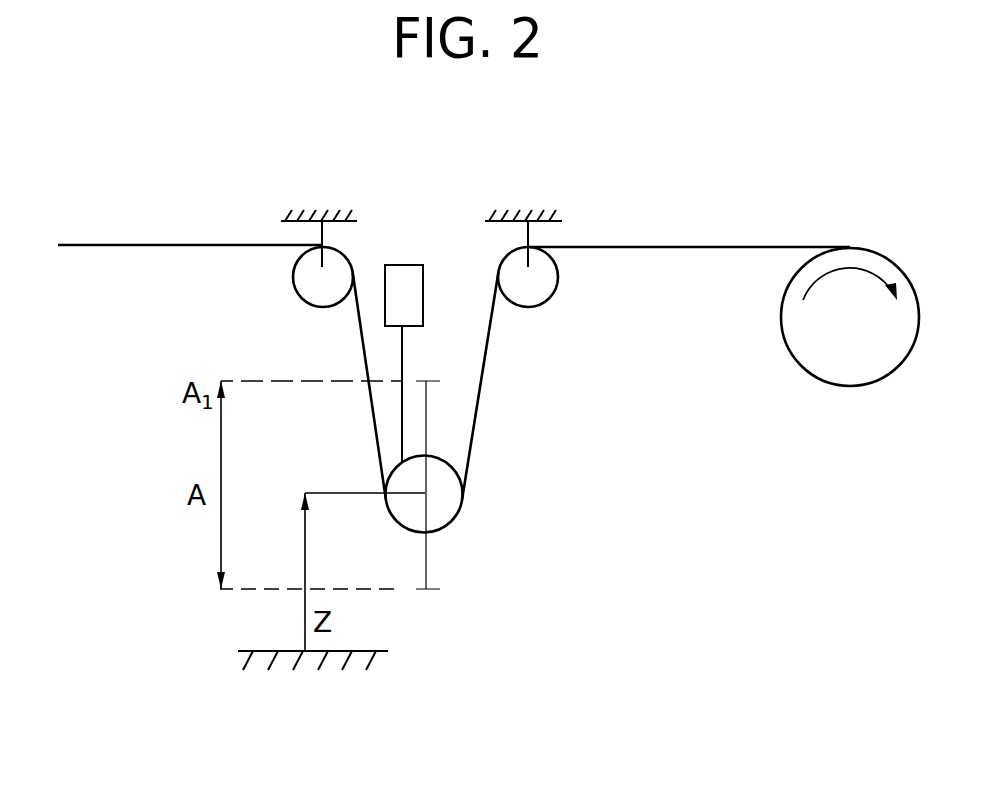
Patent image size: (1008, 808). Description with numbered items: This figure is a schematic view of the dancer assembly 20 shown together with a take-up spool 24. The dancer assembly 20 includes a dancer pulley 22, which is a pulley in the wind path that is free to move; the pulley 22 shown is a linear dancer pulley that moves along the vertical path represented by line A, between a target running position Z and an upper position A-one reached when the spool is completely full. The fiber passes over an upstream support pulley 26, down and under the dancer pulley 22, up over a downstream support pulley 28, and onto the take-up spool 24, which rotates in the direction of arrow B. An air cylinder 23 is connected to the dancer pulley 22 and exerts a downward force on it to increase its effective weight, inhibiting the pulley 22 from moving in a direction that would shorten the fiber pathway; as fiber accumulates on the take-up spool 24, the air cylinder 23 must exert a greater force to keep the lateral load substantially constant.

The dancer assembly 20 is at (560, 168).
The dancer pulley 22 is at (442, 502).
The air cylinder 23 is at (407, 277).
The take-up spool 24 is at (843, 370).
The upstream support pulley 26 is at (317, 292).
The downstream support pulley 28 is at (533, 295).